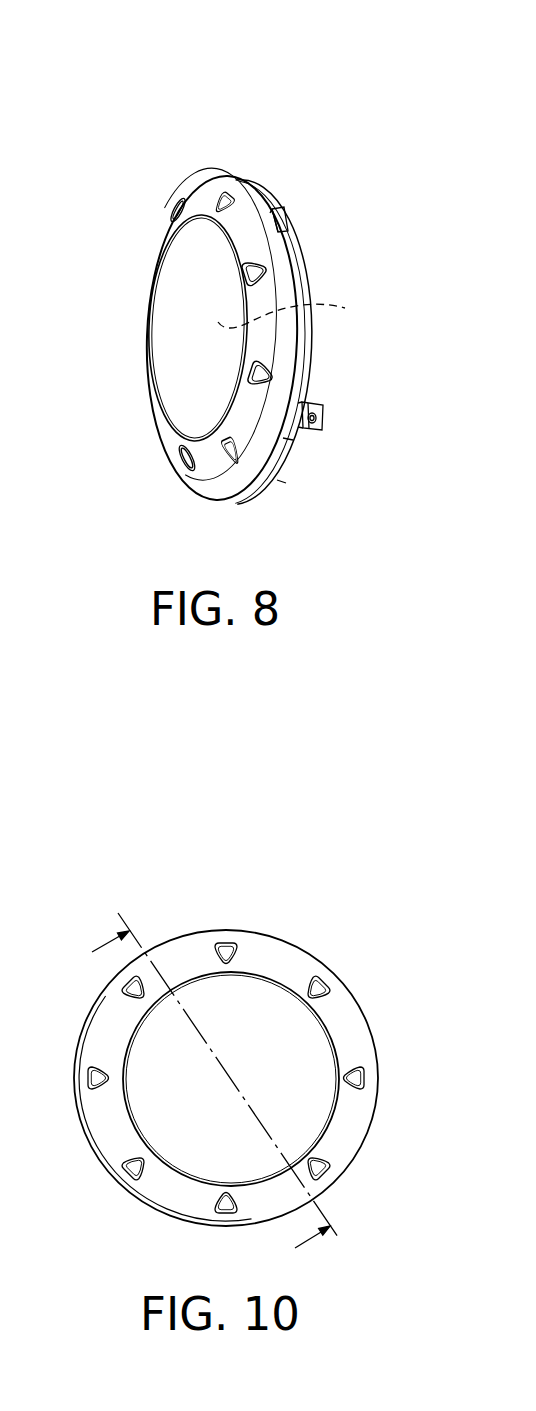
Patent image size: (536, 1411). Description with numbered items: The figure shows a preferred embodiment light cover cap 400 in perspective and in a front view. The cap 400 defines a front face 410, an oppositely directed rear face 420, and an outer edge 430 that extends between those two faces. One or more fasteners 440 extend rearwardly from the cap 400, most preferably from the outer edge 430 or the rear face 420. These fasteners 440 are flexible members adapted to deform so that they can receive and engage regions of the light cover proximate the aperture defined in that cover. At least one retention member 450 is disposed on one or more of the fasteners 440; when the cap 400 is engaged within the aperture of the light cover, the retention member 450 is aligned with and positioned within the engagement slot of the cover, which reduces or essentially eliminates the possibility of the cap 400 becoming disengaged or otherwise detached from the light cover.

In FIG. 8, the light cover cap 400 is at (292, 106).
In FIG. 10, the light cover cap 400 is at (330, 916).
In FIG. 8, the front face 410 is at (158, 316).
In FIG. 10, the front face 410 is at (307, 1110).
In FIG. 8, the rear face 420 is at (299, 309).
In FIG. 8, the outer edge 430 is at (297, 372).
In FIG. 10, the outer edge 430 is at (84, 1128).
In FIG. 8, the fastener 440 is at (287, 220).
In FIG. 8, the retention member 450 is at (303, 431).